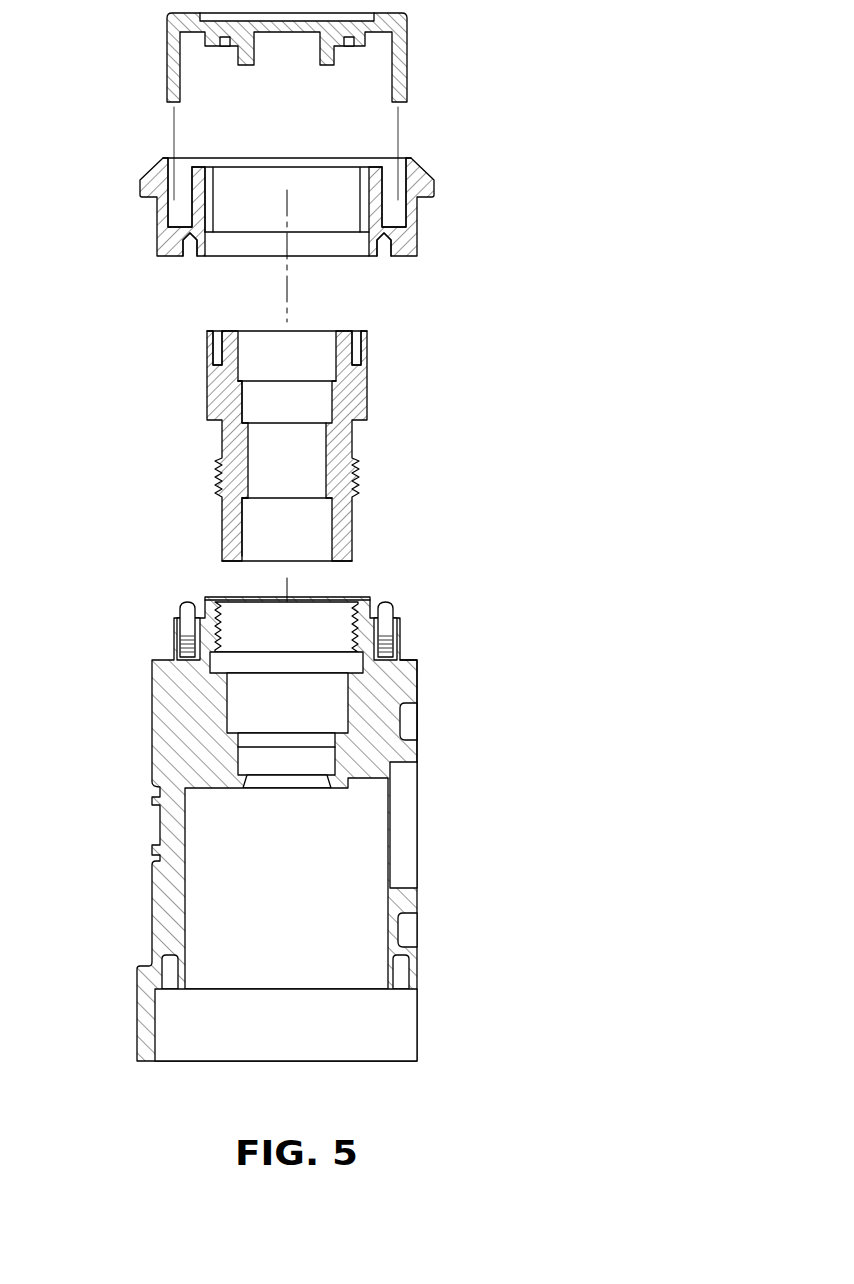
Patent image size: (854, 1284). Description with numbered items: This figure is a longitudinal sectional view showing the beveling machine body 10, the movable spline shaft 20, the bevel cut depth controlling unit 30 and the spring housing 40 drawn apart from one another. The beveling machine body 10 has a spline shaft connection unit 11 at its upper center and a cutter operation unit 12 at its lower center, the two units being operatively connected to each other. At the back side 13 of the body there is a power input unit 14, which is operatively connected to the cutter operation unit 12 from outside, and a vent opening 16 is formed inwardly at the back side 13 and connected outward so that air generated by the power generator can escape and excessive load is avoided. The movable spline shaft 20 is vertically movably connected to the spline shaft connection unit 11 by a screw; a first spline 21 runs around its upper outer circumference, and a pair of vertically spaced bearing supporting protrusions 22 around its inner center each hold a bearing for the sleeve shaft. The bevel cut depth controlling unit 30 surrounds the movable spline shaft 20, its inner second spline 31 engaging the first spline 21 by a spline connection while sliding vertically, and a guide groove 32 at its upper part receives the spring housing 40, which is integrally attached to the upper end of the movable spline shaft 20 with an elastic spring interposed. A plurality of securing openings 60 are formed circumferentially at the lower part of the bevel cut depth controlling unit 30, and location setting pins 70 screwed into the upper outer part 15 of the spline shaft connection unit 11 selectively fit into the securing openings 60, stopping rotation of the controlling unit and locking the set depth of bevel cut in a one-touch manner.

The beveling machine body 10 is at (310, 807).
The spline shaft connection unit 11 is at (323, 625).
The cutter operation unit 12 is at (237, 900).
The back side 13 is at (418, 682).
The power input unit 14 is at (402, 830).
The upper outer part 15 is at (176, 618).
The vent opening 16 is at (410, 722).
The movable spline shaft 20 is at (310, 440).
The first spline 21 is at (364, 360).
The bearing supporting protrusions 22 is at (243, 420).
The bevel cut depth controlling unit 30 is at (267, 209).
The second spline 31 is at (360, 200).
The guide groove 32 is at (182, 210).
The spring housing 40 is at (402, 52).
The securing openings 60 is at (188, 250).
The location setting pins 70 is at (395, 607).